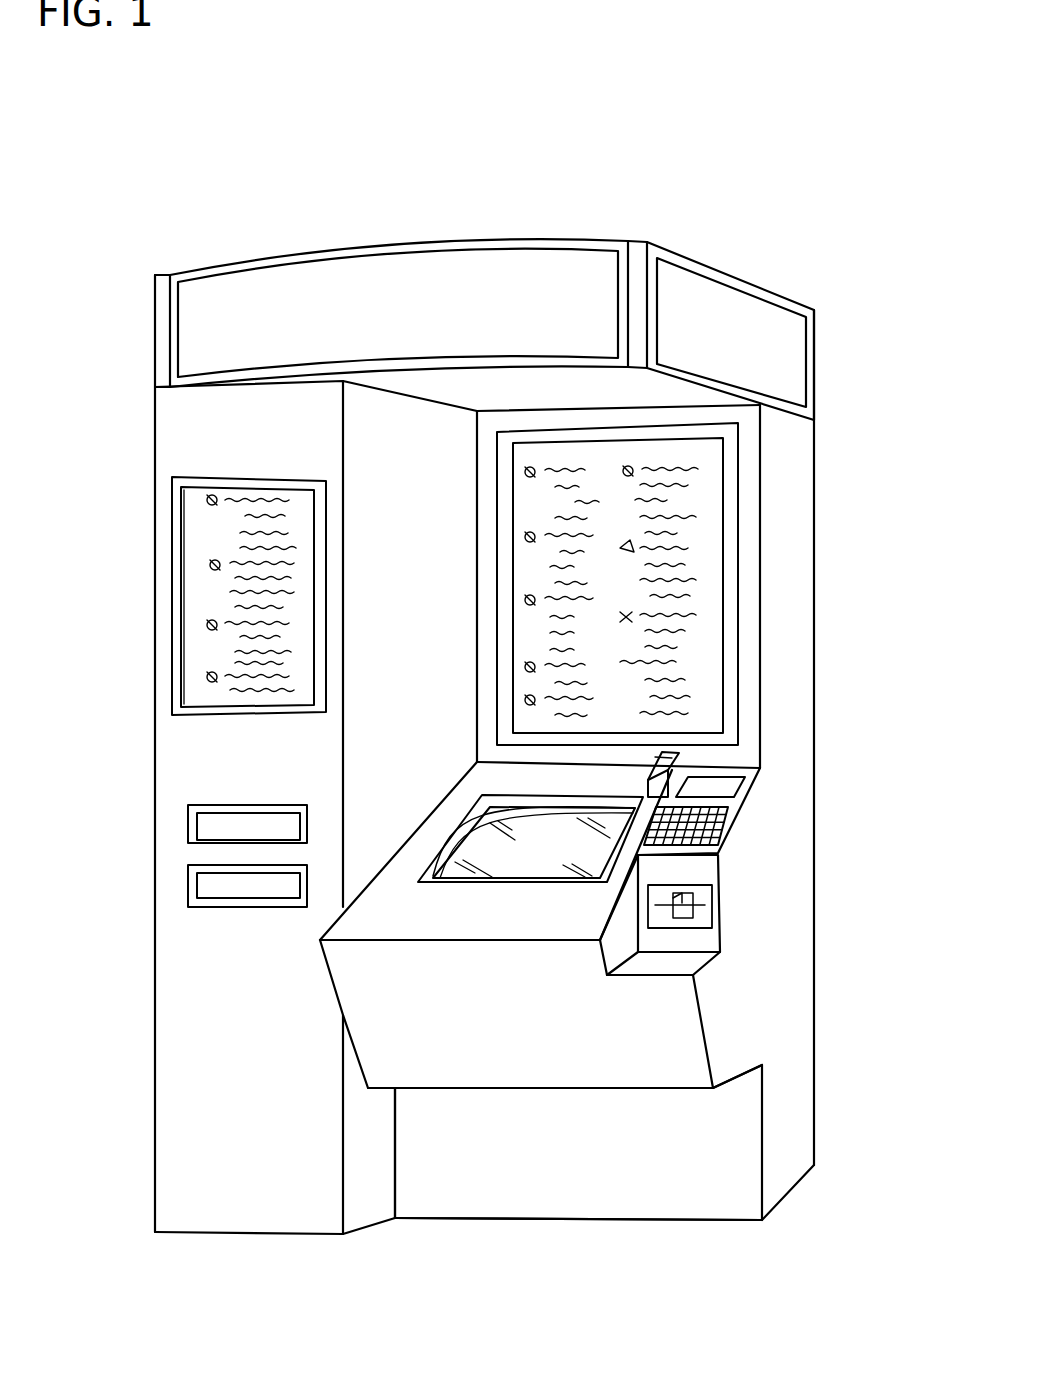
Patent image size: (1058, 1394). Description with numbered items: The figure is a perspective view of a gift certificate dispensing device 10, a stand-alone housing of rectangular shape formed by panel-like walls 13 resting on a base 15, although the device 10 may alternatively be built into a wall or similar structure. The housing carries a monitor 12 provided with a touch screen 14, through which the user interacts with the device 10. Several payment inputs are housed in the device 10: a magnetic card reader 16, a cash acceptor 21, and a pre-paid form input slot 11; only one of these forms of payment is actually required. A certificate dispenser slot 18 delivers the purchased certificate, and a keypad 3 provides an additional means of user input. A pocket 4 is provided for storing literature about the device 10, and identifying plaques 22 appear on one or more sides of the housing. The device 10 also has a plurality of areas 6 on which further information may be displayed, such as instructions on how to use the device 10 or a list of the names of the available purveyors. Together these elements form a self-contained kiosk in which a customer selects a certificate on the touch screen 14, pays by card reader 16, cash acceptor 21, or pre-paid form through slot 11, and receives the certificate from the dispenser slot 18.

The certificate dispensing device 10 is at (592, 185).
The identifying plaques 22 is at (443, 277).
The areas 6 is at (203, 551).
The magnetic card reader 16 is at (673, 760).
The pocket 4 is at (715, 788).
The keypad 3 is at (692, 832).
The cash acceptor 21 is at (700, 912).
The monitor 12 is at (512, 866).
The touch screen 14 is at (448, 887).
The pre-paid form input slot 11 is at (210, 835).
The certificate dispenser slot 18 is at (207, 892).
The panel-like walls 13 is at (420, 1222).
The base 15 is at (533, 1222).